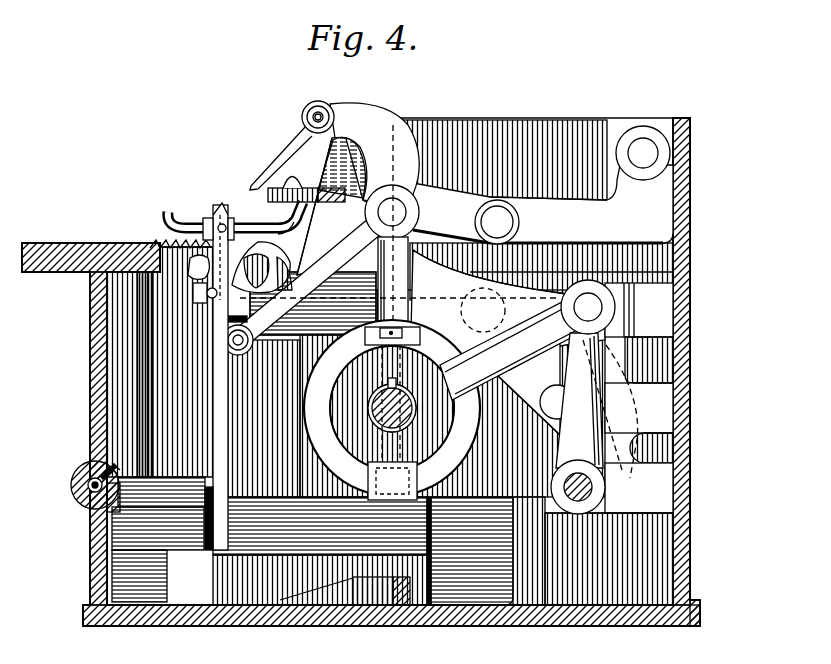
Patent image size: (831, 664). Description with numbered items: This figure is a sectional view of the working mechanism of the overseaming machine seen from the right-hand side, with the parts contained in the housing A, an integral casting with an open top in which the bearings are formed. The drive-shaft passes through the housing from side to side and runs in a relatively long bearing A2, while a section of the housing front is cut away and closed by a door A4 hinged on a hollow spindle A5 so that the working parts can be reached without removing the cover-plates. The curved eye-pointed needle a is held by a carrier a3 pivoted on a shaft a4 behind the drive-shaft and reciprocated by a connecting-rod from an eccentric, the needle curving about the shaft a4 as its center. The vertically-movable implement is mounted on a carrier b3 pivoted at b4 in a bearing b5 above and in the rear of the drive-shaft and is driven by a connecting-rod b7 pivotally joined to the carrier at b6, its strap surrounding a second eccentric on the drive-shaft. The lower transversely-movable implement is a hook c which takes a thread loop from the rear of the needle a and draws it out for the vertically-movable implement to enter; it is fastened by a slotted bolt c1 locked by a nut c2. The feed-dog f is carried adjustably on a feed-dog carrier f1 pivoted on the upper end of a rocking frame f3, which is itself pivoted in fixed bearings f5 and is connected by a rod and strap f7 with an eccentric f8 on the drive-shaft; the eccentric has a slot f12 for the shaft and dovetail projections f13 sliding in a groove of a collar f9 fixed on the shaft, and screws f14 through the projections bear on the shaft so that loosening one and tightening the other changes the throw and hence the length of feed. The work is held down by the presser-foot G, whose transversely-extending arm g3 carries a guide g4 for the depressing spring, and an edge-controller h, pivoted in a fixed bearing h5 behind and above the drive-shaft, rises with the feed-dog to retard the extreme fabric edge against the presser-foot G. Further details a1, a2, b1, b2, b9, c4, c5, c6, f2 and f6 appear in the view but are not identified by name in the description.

The housing A is at (690, 326).
The drive-shaft bearing A2 is at (690, 136).
The door A4 is at (90, 371).
The hollow spindle A5 is at (86, 486).
The eye-pointed needle a is at (278, 151).
The lever pivot a1 is at (306, 112).
The pivot pin a2 is at (330, 110).
The needle carrier a3 is at (428, 269).
The carrier shaft a4 is at (556, 401).
The lower pivot b1 is at (250, 334).
The diagonal bar b2 is at (315, 276).
The implement carrier b3 is at (543, 204).
The carrier pivot b4 is at (497, 222).
The carrier bearing b5 is at (548, 209).
The connecting-rod pivot b6 is at (392, 212).
The connecting-rod b7 is at (393, 283).
The stop b9 is at (244, 309).
The lower transversely-movable implement c is at (228, 383).
The bolt c1 is at (261, 267).
The nut c2 is at (202, 279).
The slide block c4 is at (320, 526).
The slot c5 is at (653, 408).
The block c6 is at (353, 580).
The feed-dog f is at (151, 247).
The feed-dog carrier f1 is at (372, 407).
The crank pin f2 is at (588, 307).
The rocking frame f3 is at (585, 400).
The fixed bearings f5 is at (618, 489).
The roller f6 is at (476, 310).
The rod and strap f7 is at (510, 350).
The adjustable eccentric f8 is at (401, 426).
The collar f9 is at (392, 408).
The slot f12 is at (386, 381).
The dovetail projections f13 is at (313, 316).
The screws f14 is at (392, 327).
The presser-foot G is at (166, 214).
The transversely-extending arm g3 is at (304, 218).
The guide projection g4 is at (292, 185).
The edge-controller h is at (290, 265).
The fixed bearing h5 is at (643, 310).